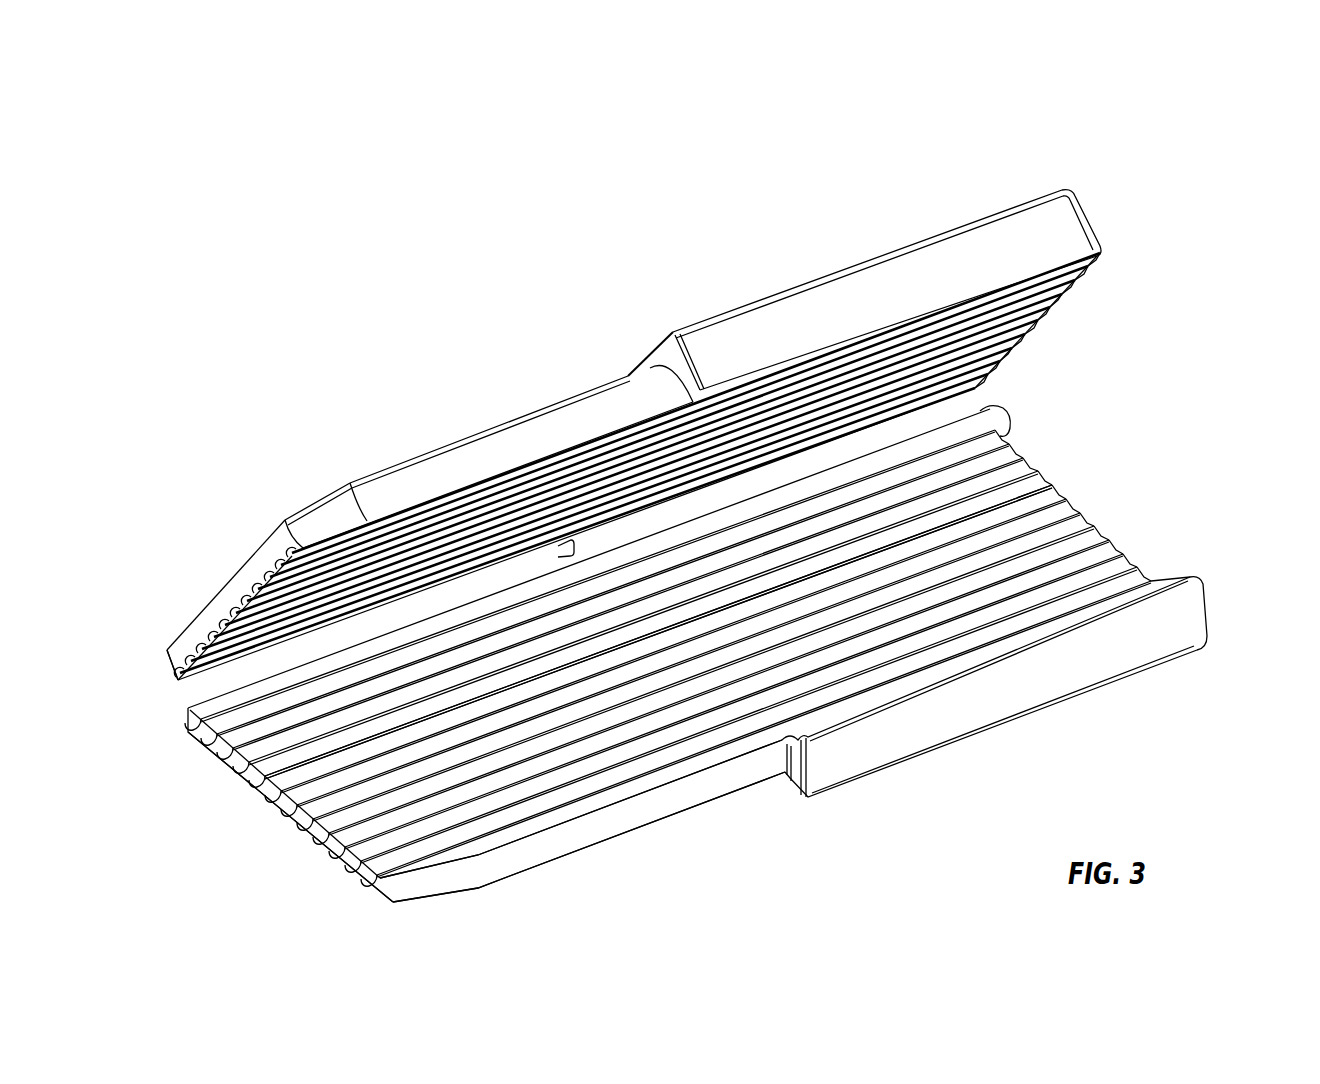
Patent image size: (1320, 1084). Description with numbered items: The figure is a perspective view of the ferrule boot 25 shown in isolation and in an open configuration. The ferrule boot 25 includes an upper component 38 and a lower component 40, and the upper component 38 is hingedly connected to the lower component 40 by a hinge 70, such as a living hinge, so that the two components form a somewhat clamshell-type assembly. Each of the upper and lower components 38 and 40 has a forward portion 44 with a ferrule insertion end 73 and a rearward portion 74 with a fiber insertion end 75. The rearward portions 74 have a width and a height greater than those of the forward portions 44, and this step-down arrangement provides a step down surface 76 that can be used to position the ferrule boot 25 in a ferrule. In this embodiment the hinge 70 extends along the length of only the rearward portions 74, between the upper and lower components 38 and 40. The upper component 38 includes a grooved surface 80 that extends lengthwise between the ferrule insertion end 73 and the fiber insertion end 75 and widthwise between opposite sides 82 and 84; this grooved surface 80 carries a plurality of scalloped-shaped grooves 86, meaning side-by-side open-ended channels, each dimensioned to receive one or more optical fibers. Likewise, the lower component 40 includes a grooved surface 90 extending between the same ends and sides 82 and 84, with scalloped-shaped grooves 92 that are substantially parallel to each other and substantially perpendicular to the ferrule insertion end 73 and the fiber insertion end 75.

The ferrule boot 25 is at (857, 131).
The upper component 38 is at (600, 387).
The lower component 40 is at (733, 793).
The forward portion 44 is at (380, 470).
The hinge 70 is at (985, 402).
The ferrule insertion end 73 is at (208, 602).
The rearward portion 74 is at (1095, 215).
The fiber insertion end 75 is at (1103, 247).
The step down surface 76 is at (672, 332).
The grooved surface 80 is at (165, 652).
The side 82 is at (490, 445).
The side 84 is at (182, 688).
The scalloped-shaped grooves 86 is at (310, 550).
The grooved surface 90 is at (370, 850).
The scalloped-shaped grooves 92 is at (1040, 500).